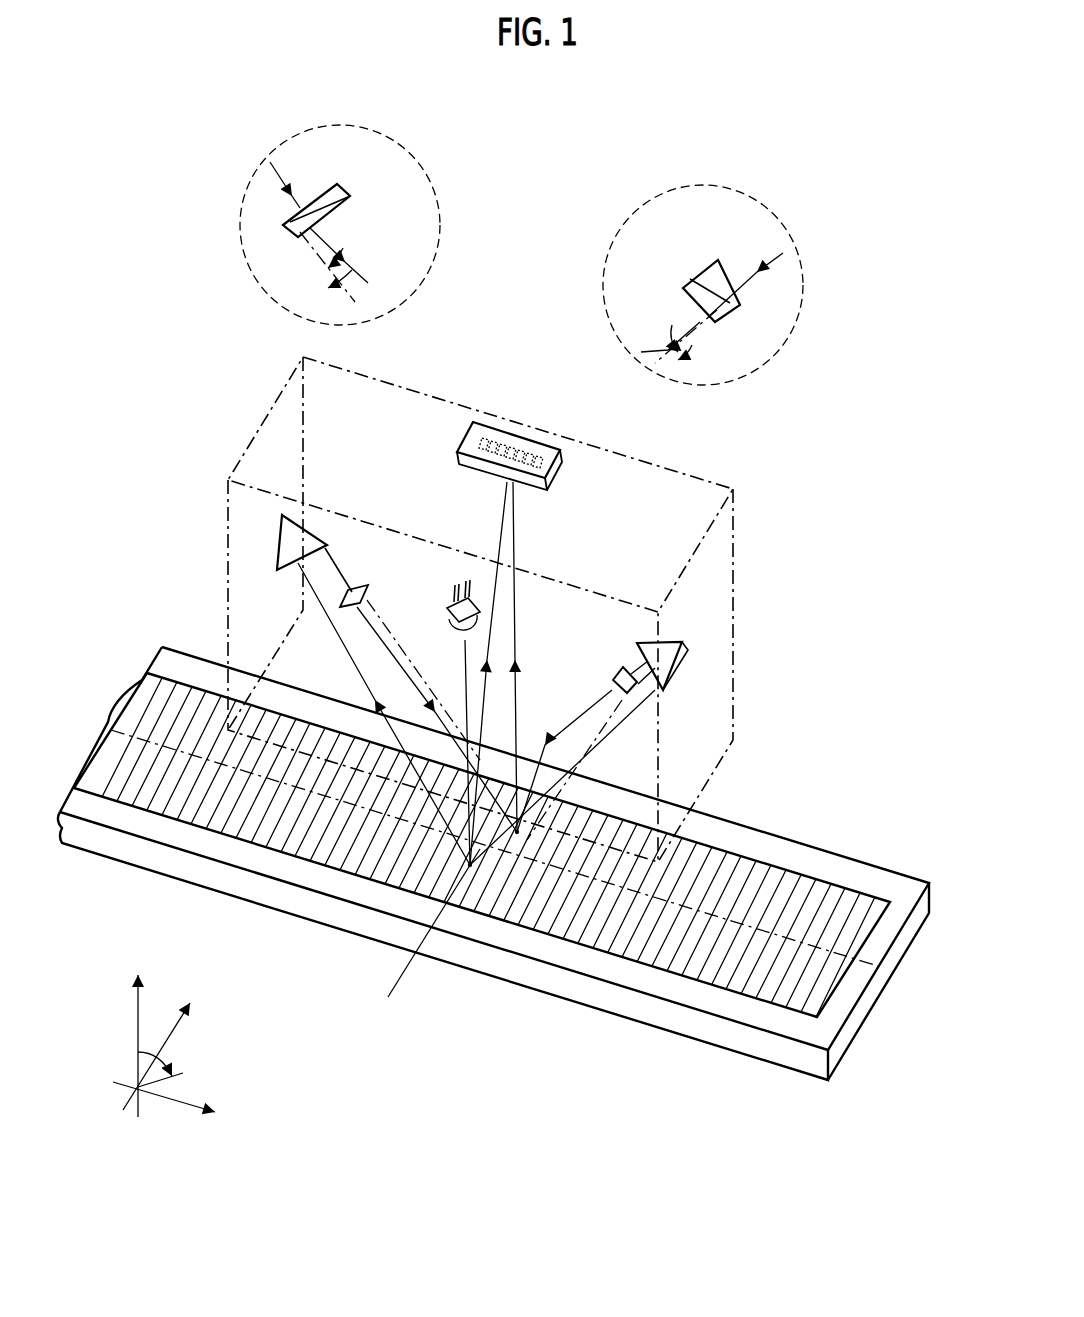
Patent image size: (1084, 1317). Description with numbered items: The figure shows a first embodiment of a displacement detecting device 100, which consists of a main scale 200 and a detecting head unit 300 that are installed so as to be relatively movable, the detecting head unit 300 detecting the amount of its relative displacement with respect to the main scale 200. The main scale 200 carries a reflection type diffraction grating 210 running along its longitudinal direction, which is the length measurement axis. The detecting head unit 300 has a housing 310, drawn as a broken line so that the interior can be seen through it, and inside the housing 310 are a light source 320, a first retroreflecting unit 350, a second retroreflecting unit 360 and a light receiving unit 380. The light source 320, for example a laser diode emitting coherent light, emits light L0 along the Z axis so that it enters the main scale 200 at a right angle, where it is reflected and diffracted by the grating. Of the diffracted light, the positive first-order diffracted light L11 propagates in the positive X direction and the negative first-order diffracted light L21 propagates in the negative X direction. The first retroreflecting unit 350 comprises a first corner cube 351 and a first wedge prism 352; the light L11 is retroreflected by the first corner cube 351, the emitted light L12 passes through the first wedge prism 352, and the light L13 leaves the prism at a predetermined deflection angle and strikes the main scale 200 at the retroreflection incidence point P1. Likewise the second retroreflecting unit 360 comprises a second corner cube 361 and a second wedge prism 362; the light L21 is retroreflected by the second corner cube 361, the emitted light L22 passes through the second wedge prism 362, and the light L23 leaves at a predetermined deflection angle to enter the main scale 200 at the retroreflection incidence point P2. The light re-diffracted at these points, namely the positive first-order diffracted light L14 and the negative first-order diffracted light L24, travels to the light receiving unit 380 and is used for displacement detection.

The displacement detecting device 100 is at (238, 420).
The main scale 200 is at (832, 868).
The reflection type diffraction grating 210 is at (765, 878).
The detecting head unit 300 is at (552, 609).
The housing 310 is at (676, 470).
The light source 320 is at (458, 603).
The first retroreflecting unit 350 is at (681, 458).
The first corner cube 351 is at (670, 636).
The first wedge prism 352 is at (622, 670).
The second retroreflecting unit 360 is at (295, 366).
The second corner cube 361 is at (281, 522).
The second wedge prism 362 is at (362, 590).
The light receiving unit 380 is at (510, 428).
The light L0 is at (464, 688).
The positive first-order diffracted light L11 is at (582, 748).
The light emitted from the first corner cube L12 is at (640, 667).
The light emitted from the first wedge prism L13 is at (583, 725).
The positive first-order diffracted light L14 is at (492, 545).
The negative first-order diffracted light L21 is at (362, 690).
The light emitted from the second corner cube L22 is at (338, 566).
The light emitted from the second wedge prism L23 is at (385, 642).
The negative first-order diffracted light L24 is at (520, 500).
The retroreflection incidence point P1 is at (470, 865).
The retroreflection incidence point P2 is at (517, 835).